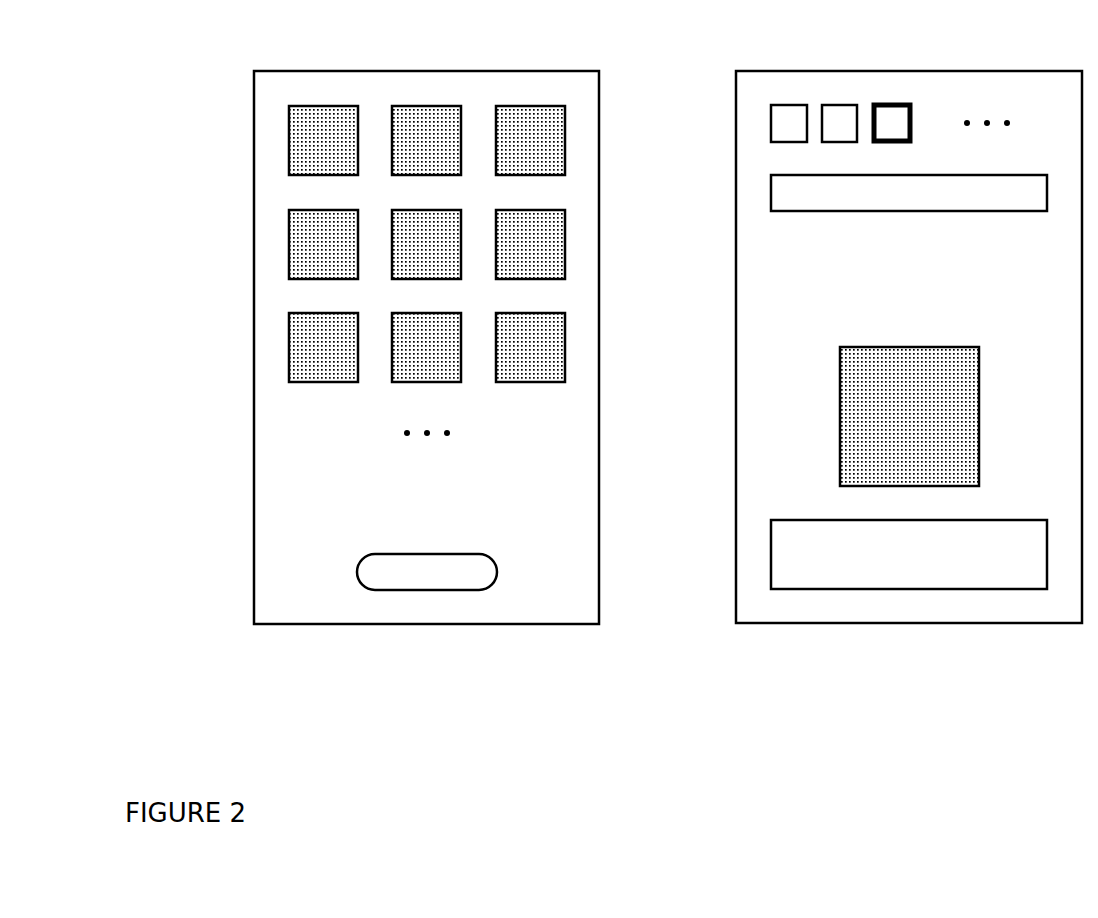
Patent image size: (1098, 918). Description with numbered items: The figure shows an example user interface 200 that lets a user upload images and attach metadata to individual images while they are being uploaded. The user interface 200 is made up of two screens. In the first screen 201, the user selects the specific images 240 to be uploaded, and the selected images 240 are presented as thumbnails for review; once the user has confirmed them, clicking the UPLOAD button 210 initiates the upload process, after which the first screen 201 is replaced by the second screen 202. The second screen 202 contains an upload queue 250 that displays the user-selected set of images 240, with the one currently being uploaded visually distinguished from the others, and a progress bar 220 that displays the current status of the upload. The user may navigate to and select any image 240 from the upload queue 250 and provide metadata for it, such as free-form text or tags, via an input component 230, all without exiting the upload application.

The user interface 200 is at (704, 716).
The first screen 201 is at (426, 326).
The second screen 202 is at (909, 325).
The UPLOAD button 210 is at (424, 611).
The progress bar 220 is at (909, 215).
The input component 230 is at (909, 594).
The image 240 is at (651, 257).
The upload queue 250 is at (835, 85).